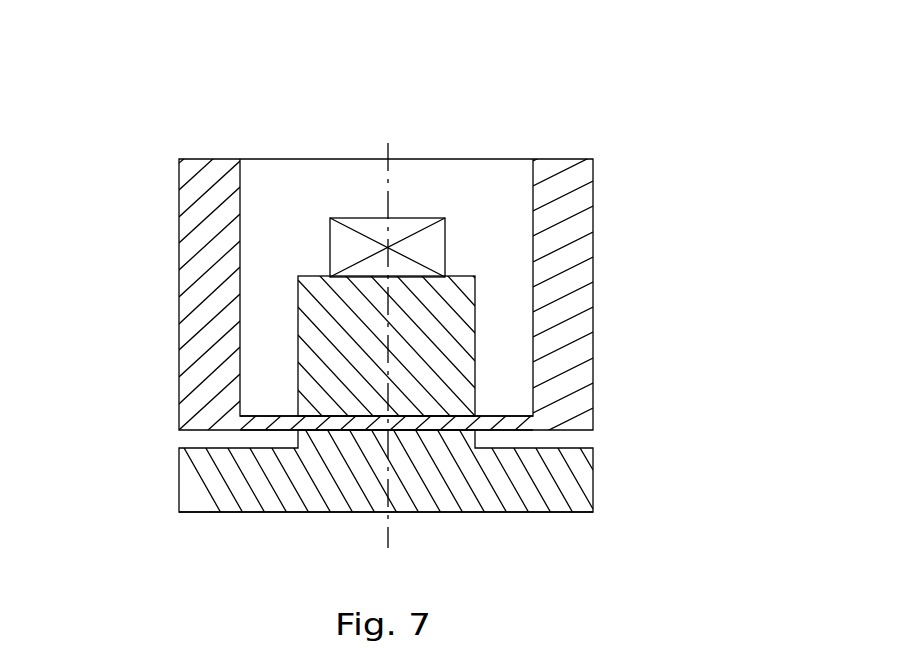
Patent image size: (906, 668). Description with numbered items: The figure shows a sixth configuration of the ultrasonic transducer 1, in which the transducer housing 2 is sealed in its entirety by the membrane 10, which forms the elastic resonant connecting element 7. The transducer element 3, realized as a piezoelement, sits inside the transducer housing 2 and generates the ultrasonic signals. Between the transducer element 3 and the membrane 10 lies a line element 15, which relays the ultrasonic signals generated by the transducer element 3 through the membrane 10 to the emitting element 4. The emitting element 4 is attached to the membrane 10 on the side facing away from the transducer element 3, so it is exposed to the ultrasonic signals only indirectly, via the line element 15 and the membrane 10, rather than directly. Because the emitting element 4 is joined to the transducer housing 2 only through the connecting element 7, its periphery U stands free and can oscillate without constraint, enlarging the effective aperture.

The ultrasonic transducer 1 is at (550, 95).
The transducer housing 2 is at (590, 173).
The transducer element 3 is at (435, 249).
The line element 15 is at (430, 360).
The connecting element 7 is at (503, 403).
The membrane 10 is at (513, 427).
The periphery U is at (176, 487).
The emitting element 4 is at (338, 518).